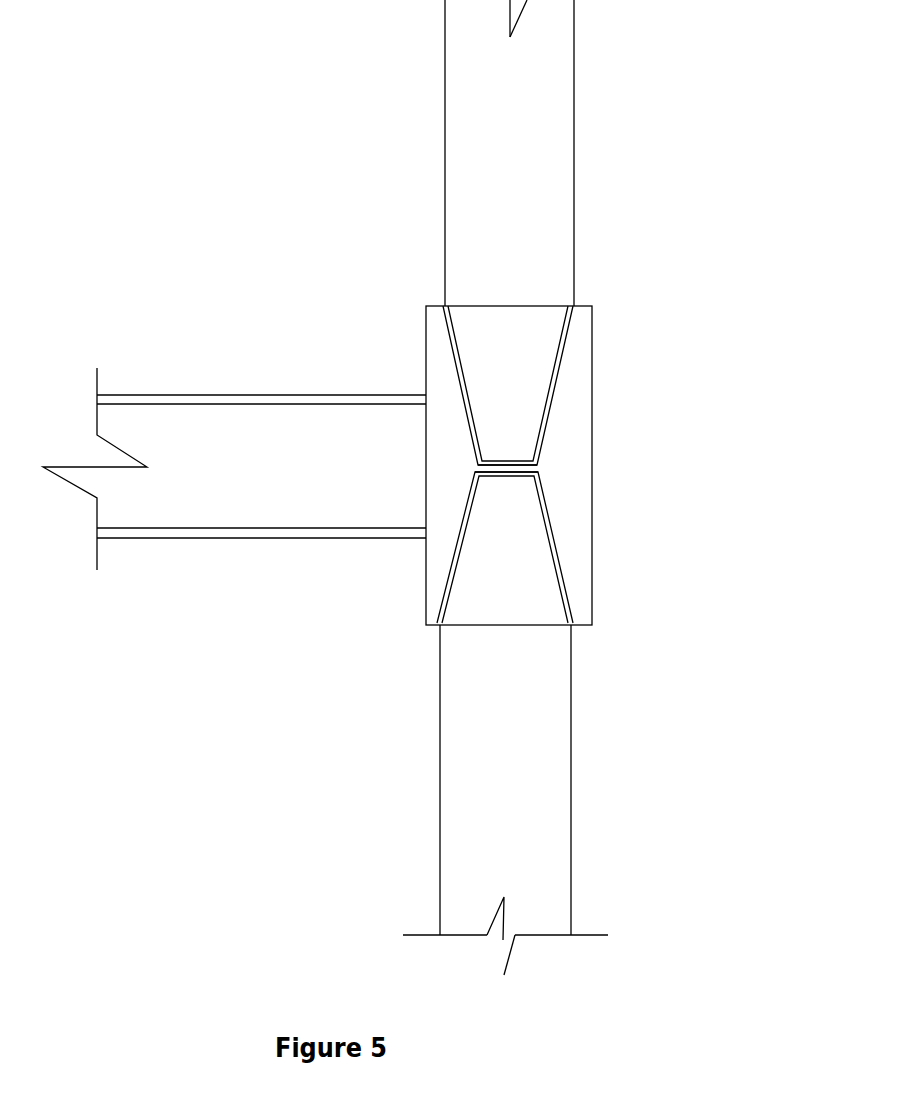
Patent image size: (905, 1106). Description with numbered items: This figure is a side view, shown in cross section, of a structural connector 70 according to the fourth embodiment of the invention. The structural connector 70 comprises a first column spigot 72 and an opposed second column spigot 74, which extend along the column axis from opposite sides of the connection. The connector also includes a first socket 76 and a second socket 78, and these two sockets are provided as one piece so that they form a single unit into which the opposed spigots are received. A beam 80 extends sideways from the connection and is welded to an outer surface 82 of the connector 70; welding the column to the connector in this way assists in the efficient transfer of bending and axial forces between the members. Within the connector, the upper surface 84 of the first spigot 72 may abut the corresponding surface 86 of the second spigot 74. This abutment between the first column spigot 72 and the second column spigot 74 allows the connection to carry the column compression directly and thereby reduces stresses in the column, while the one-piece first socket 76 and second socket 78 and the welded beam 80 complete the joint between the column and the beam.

The structural connector 70 is at (700, 112).
The first column spigot 72 is at (545, 787).
The second column spigot 74 is at (503, 95).
The first socket 76 is at (572, 523).
The second socket 78 is at (575, 367).
The beam 80 is at (283, 443).
The outer surface 82 is at (423, 358).
The upper surface 84 is at (498, 475).
The corresponding surface 86 is at (508, 460).